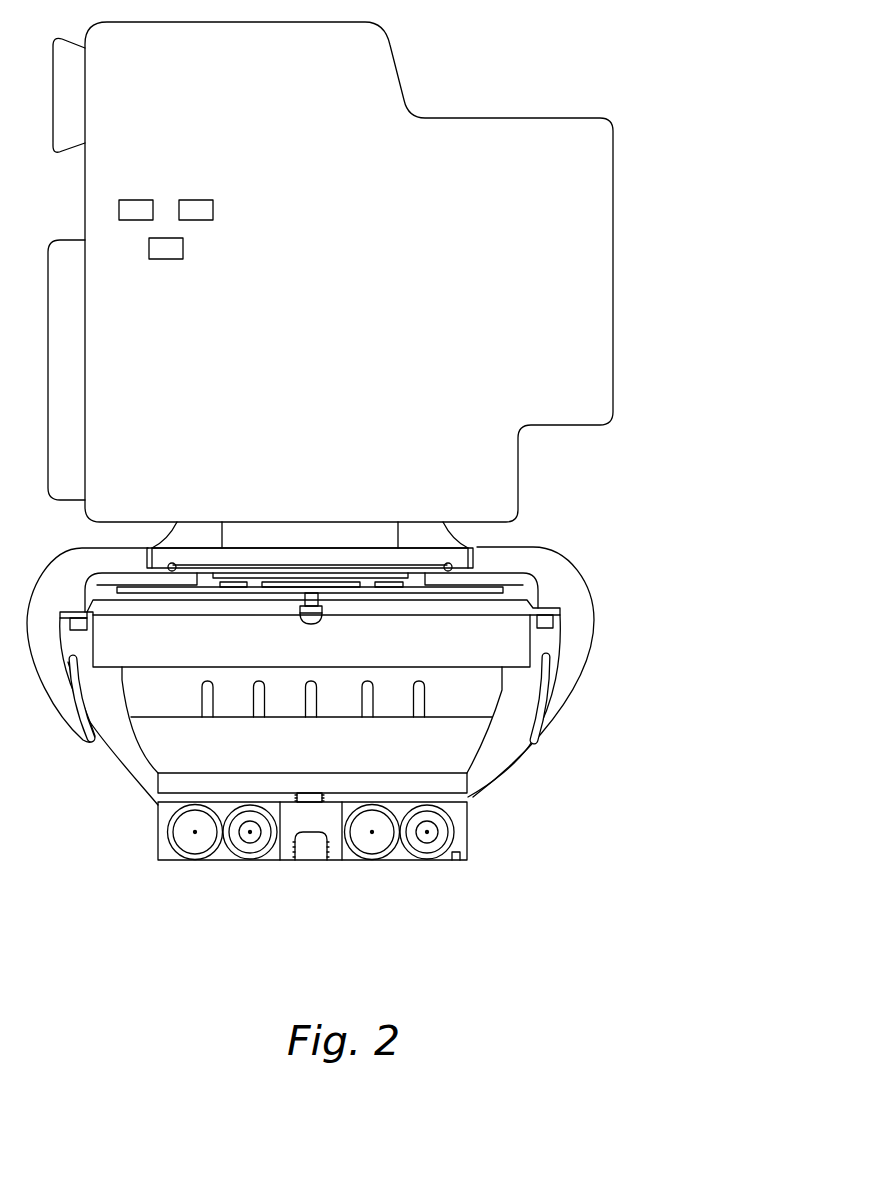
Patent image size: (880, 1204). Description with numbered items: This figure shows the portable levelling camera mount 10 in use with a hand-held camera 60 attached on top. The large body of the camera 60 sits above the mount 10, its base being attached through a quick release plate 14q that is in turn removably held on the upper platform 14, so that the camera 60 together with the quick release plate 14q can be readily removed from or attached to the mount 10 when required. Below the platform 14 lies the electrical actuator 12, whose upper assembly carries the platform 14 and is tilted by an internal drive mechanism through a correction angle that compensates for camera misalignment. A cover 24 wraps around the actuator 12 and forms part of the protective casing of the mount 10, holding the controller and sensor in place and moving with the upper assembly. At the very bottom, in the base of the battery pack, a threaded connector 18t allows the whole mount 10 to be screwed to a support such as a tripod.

The portable levelling camera mount 10 is at (372, 725).
The electrical actuator 12 is at (480, 695).
The upper platform 14 is at (485, 541).
The quick release plate 14q is at (322, 545).
The threaded connector 18t is at (300, 850).
The cover 24 is at (575, 627).
The camera 60 is at (283, 298).